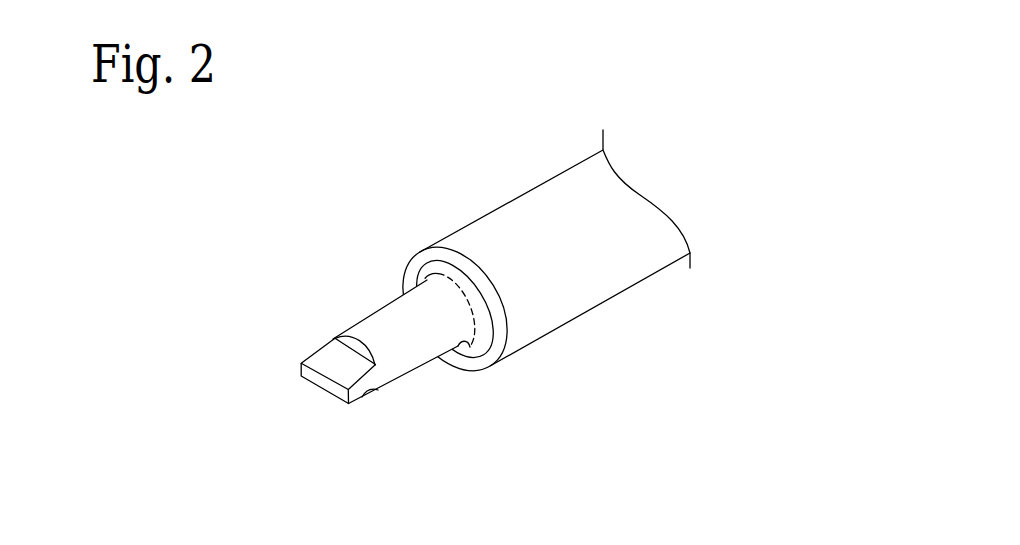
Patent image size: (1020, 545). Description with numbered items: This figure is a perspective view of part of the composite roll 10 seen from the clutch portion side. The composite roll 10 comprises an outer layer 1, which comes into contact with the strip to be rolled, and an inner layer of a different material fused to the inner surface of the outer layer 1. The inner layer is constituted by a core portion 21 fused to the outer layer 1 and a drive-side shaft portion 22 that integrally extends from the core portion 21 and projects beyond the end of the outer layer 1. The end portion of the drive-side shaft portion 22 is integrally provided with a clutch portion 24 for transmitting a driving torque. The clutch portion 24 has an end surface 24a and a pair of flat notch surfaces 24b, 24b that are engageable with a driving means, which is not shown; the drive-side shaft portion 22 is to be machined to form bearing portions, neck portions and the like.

The outer layer 1 is at (558, 188).
The composite roll 10 is at (472, 295).
The core portion 21 is at (484, 354).
The drive-side shaft portion 22 is at (388, 321).
The clutch portion 24 is at (315, 385).
The end surface 24a is at (321, 386).
The flat notch surface 24b is at (329, 360).